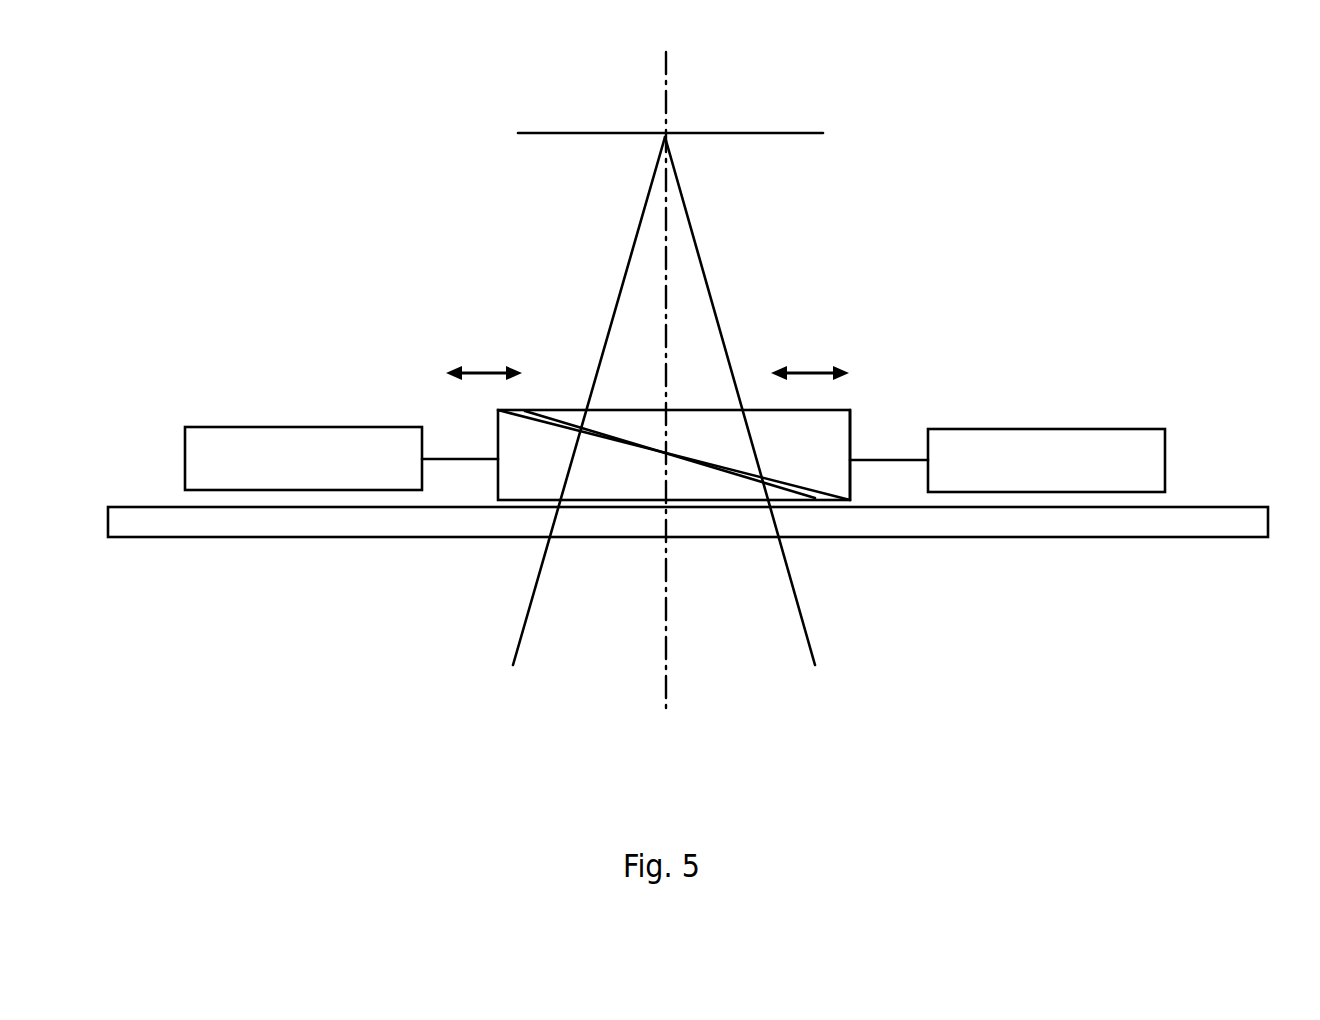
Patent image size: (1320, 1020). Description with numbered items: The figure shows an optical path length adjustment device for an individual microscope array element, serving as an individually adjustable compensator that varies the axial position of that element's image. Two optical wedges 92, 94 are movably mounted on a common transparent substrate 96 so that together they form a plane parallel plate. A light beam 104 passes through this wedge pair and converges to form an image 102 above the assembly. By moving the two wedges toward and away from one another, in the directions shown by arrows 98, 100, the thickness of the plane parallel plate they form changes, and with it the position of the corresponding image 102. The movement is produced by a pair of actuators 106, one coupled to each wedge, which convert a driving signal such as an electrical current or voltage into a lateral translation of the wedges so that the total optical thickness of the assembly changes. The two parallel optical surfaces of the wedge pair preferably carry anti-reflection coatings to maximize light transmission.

The optical wedge 92 is at (535, 470).
The optical wedge 94 is at (803, 463).
The transparent substrate 96 is at (915, 525).
The arrow 98 is at (483, 363).
The arrow 100 is at (810, 363).
The image 102 is at (752, 130).
The light beam 104 is at (720, 307).
The actuator 106 is at (332, 448).